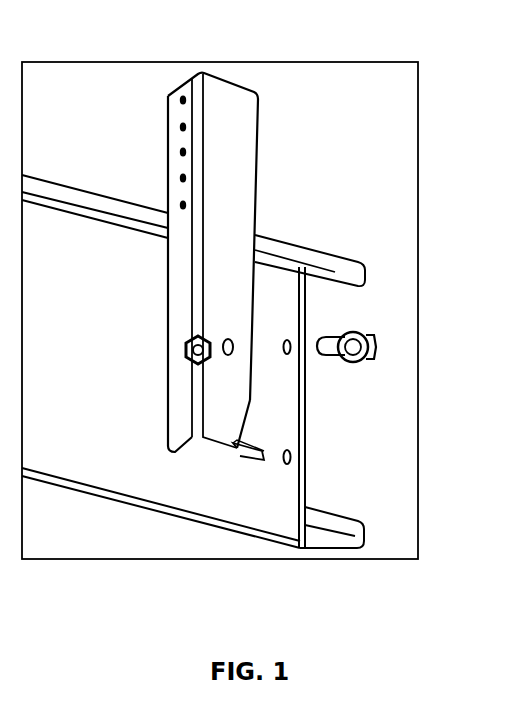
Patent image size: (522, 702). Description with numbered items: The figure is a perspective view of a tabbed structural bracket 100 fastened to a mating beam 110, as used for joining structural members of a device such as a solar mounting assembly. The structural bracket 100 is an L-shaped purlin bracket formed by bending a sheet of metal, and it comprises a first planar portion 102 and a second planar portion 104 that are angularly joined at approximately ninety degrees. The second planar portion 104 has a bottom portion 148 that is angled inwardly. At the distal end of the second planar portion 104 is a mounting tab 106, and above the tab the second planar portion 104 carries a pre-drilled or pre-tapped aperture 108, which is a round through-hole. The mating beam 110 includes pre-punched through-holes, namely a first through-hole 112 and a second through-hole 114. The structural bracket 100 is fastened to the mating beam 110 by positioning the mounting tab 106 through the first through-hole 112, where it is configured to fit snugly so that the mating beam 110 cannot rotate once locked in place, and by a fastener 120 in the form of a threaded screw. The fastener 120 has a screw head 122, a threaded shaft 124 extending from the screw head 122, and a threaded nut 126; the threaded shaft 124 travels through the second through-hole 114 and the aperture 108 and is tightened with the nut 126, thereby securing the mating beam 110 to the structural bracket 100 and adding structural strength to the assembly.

The structural bracket 100 is at (175, 457).
The first planar portion 102 is at (168, 114).
The second planar portion 104 is at (262, 113).
The mounting tab 106 is at (230, 450).
The aperture 108 is at (226, 340).
The mating beam 110 is at (281, 236).
The first through-hole 112 is at (293, 458).
The second through-hole 114 is at (289, 338).
The fastener 120 is at (399, 329).
The screw head 122 is at (378, 346).
The threaded shaft 124 is at (337, 360).
The threaded nut 126 is at (185, 348).
The bottom portion 148 is at (248, 412).